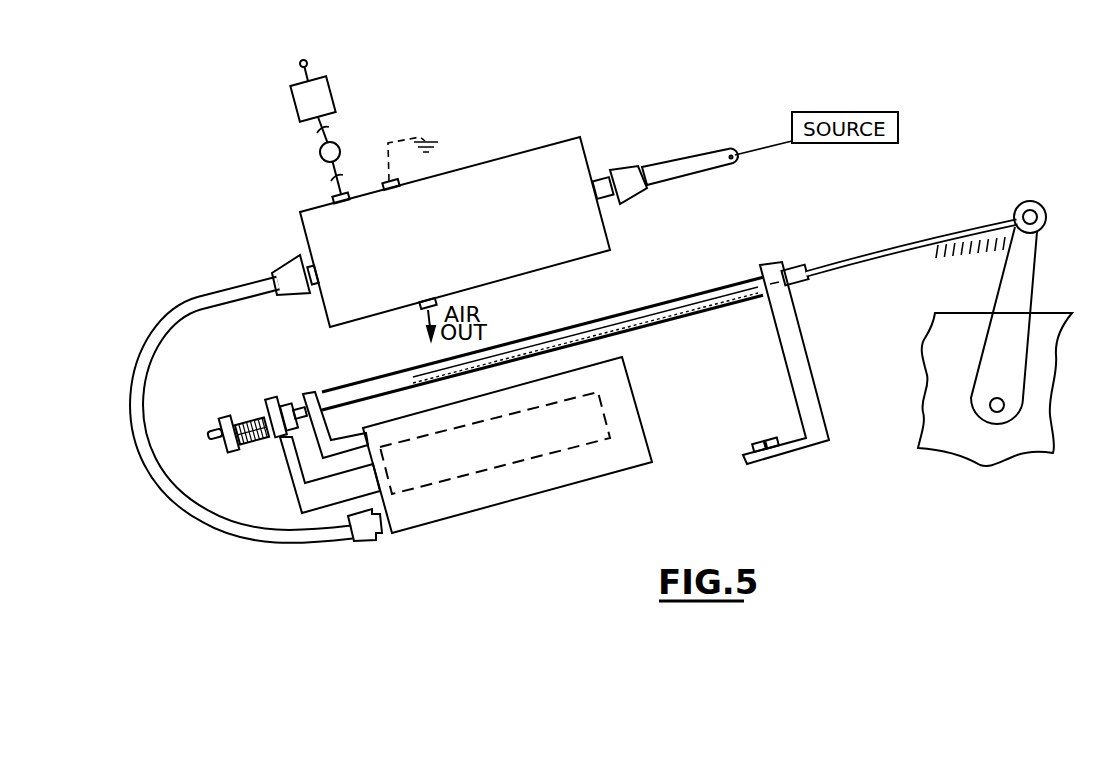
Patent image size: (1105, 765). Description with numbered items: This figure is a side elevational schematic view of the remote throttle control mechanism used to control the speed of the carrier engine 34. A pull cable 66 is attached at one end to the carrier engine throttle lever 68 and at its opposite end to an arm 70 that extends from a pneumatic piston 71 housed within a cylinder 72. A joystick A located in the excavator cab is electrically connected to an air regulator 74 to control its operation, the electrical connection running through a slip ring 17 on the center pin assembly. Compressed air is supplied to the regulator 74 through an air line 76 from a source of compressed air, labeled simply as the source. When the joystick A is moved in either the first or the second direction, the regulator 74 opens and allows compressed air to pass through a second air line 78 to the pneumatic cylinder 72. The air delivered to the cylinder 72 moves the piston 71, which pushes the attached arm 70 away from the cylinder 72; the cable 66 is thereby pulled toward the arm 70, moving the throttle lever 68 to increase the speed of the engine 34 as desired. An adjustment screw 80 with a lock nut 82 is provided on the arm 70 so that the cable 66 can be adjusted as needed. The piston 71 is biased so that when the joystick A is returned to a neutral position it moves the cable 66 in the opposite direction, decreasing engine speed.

The joystick A is at (294, 104).
The slip ring 17 is at (320, 153).
The carrier engine 34 is at (998, 456).
The pull cable 66 is at (892, 238).
The throttle lever 68 is at (1036, 262).
The arm 70 is at (292, 483).
The pneumatic piston 71 is at (538, 460).
The cylinder 72 is at (460, 516).
The air regulator 74 is at (498, 158).
The air line 76 is at (668, 164).
The air line 78 is at (136, 462).
The adjustment screw 80 is at (228, 416).
The lock nut 82 is at (264, 406).